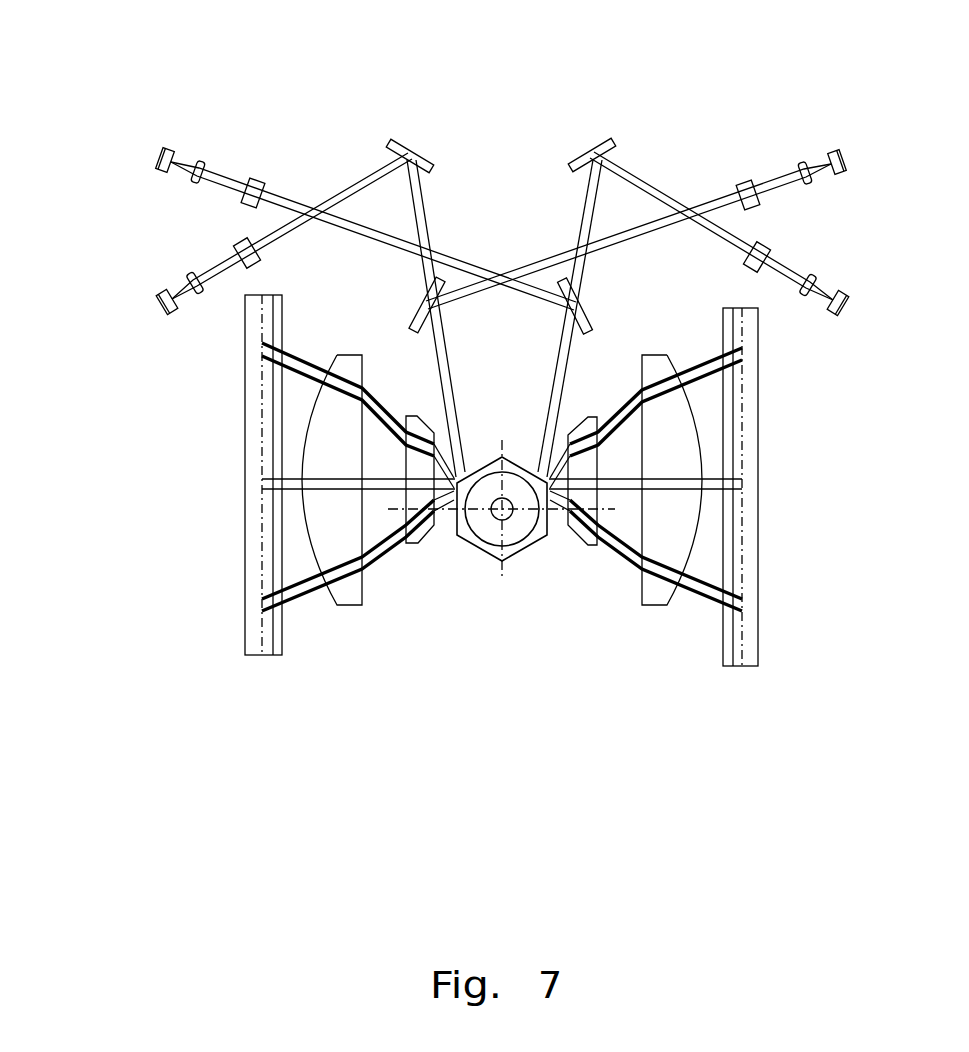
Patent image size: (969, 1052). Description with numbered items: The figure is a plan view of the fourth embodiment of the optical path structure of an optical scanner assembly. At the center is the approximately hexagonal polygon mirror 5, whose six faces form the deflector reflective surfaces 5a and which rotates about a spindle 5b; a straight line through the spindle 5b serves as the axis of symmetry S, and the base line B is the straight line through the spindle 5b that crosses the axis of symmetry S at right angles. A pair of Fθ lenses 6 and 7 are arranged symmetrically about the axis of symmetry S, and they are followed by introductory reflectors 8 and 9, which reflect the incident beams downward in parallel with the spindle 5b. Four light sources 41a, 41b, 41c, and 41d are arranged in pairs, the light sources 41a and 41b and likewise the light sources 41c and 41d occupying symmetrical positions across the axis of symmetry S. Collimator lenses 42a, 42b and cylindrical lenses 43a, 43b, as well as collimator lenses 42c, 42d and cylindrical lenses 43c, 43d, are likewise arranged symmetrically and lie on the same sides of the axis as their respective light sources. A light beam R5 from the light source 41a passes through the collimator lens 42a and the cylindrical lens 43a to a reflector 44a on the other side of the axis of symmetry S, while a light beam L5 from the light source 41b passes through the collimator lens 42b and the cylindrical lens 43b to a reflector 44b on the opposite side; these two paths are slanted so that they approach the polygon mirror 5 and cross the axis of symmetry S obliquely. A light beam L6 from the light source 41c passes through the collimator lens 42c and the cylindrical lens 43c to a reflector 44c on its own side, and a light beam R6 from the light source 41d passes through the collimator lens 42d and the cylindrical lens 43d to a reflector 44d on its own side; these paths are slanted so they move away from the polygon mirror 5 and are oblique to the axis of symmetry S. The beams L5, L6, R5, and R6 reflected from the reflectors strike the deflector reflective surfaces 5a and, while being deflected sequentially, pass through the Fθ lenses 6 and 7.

The polygon mirror 5 is at (540, 559).
The deflector reflective surfaces 5a is at (460, 467).
The spindle 5b is at (480, 540).
The Fθ lens 6 is at (358, 556).
The Fθ lens 7 is at (608, 548).
The introductory reflector 8 is at (258, 497).
The introductory reflector 9 is at (745, 522).
The light source 41a is at (163, 153).
The light source 41b is at (835, 155).
The light source 41c is at (157, 302).
The light source 41d is at (838, 298).
The collimator lens 42a is at (200, 160).
The collimator lens 42b is at (802, 165).
The collimator lens 42c is at (195, 297).
The collimator lens 42d is at (815, 272).
The cylindrical lens 43a is at (257, 187).
The cylindrical lens 43b is at (748, 183).
The cylindrical lens 43c is at (240, 247).
The cylindrical lens 43d is at (757, 262).
The reflector 44a is at (587, 330).
The reflector 44b is at (420, 312).
The reflector 44c is at (408, 155).
The reflector 44d is at (583, 155).
The base line B is at (395, 477).
The axis of symmetry S is at (502, 565).
The light beam L5 is at (713, 200).
The light beam L6 is at (295, 230).
The light beam R5 is at (303, 213).
The light beam R6 is at (705, 223).